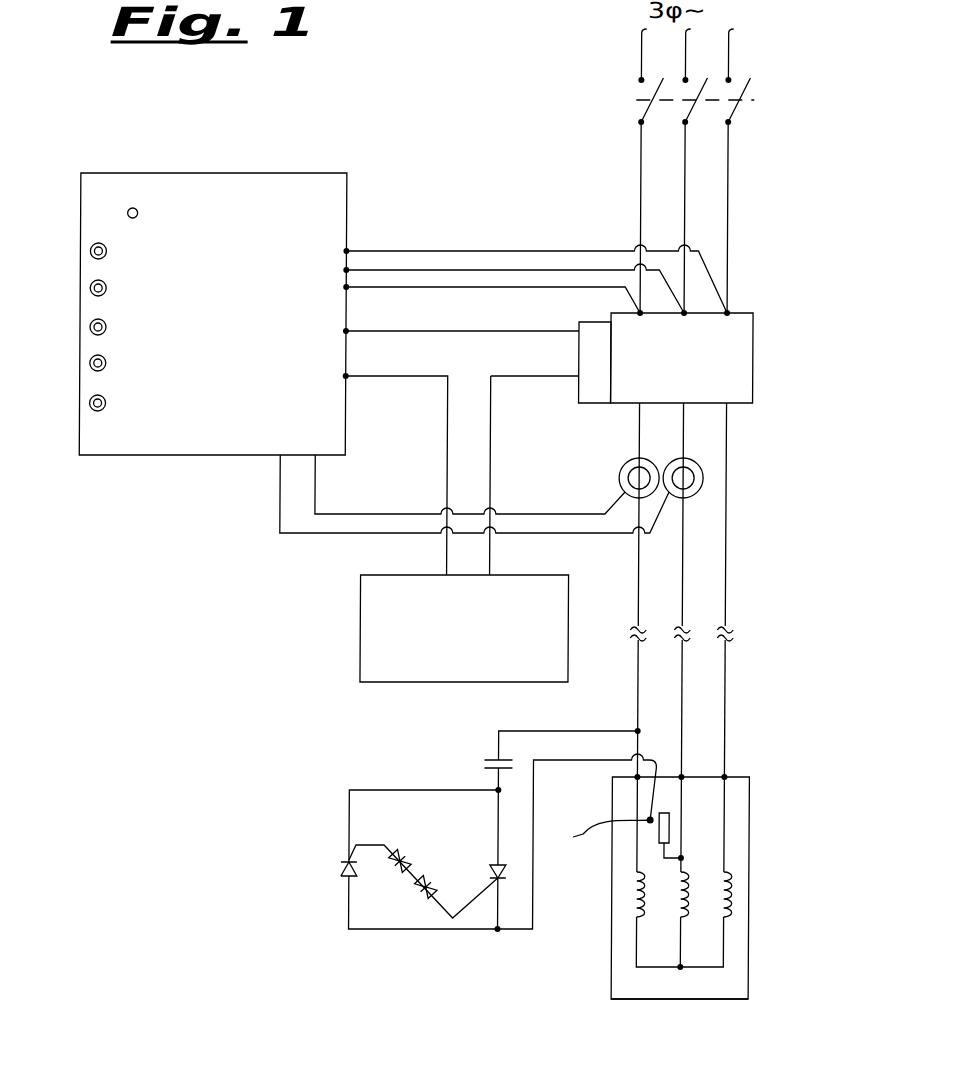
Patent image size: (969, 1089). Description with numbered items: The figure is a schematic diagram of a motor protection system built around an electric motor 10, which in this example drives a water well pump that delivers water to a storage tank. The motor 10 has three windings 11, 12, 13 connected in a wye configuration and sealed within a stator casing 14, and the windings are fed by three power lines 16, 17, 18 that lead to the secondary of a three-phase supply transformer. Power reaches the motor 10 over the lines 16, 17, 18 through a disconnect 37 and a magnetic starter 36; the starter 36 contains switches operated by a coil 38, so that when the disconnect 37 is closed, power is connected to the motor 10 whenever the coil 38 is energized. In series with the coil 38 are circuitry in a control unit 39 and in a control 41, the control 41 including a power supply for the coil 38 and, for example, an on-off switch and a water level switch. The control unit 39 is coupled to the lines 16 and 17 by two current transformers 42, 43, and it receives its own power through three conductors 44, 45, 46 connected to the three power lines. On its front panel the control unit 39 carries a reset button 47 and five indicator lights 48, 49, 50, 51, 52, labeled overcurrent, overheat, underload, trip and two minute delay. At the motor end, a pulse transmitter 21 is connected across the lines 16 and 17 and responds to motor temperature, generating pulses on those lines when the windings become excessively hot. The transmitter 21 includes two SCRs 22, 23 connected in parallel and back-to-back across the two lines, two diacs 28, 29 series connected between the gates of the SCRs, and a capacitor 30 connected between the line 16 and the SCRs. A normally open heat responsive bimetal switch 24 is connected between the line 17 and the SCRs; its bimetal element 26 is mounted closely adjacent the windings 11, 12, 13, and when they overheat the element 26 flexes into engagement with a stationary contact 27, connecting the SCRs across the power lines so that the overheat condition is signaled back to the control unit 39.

The electric motor 10 is at (748, 770).
The winding 11 is at (633, 912).
The winding 12 is at (678, 913).
The winding 13 is at (728, 918).
The stator casing 14 is at (631, 1000).
The power line 16 is at (638, 676).
The power line 17 is at (683, 676).
The power line 18 is at (727, 676).
The pulse transmitter 21 is at (332, 812).
The SCR 22 is at (343, 862).
The SCR 23 is at (502, 866).
The heat responsive bimetal switch 24 is at (647, 817).
The bimetal element 26 is at (671, 822).
The stationary contact 27 is at (607, 844).
The diac 28 is at (397, 852).
The diac 29 is at (428, 881).
The capacitor 30 is at (490, 757).
The magnetic starter 36 is at (753, 311).
The disconnect 37 is at (750, 100).
The coil 38 is at (580, 321).
The control unit 39 is at (320, 163).
The control 41 is at (342, 655).
The current transformer 42 is at (615, 477).
The current transformer 43 is at (708, 477).
The conductor 44 is at (447, 251).
The conductor 45 is at (475, 270).
The conductor 46 is at (503, 287).
The reset button 47 is at (130, 207).
The indicator light 48 is at (88, 254).
The indicator light 49 is at (88, 290).
The indicator light 50 is at (88, 327).
The indicator light 51 is at (88, 364).
The indicator light 52 is at (88, 403).